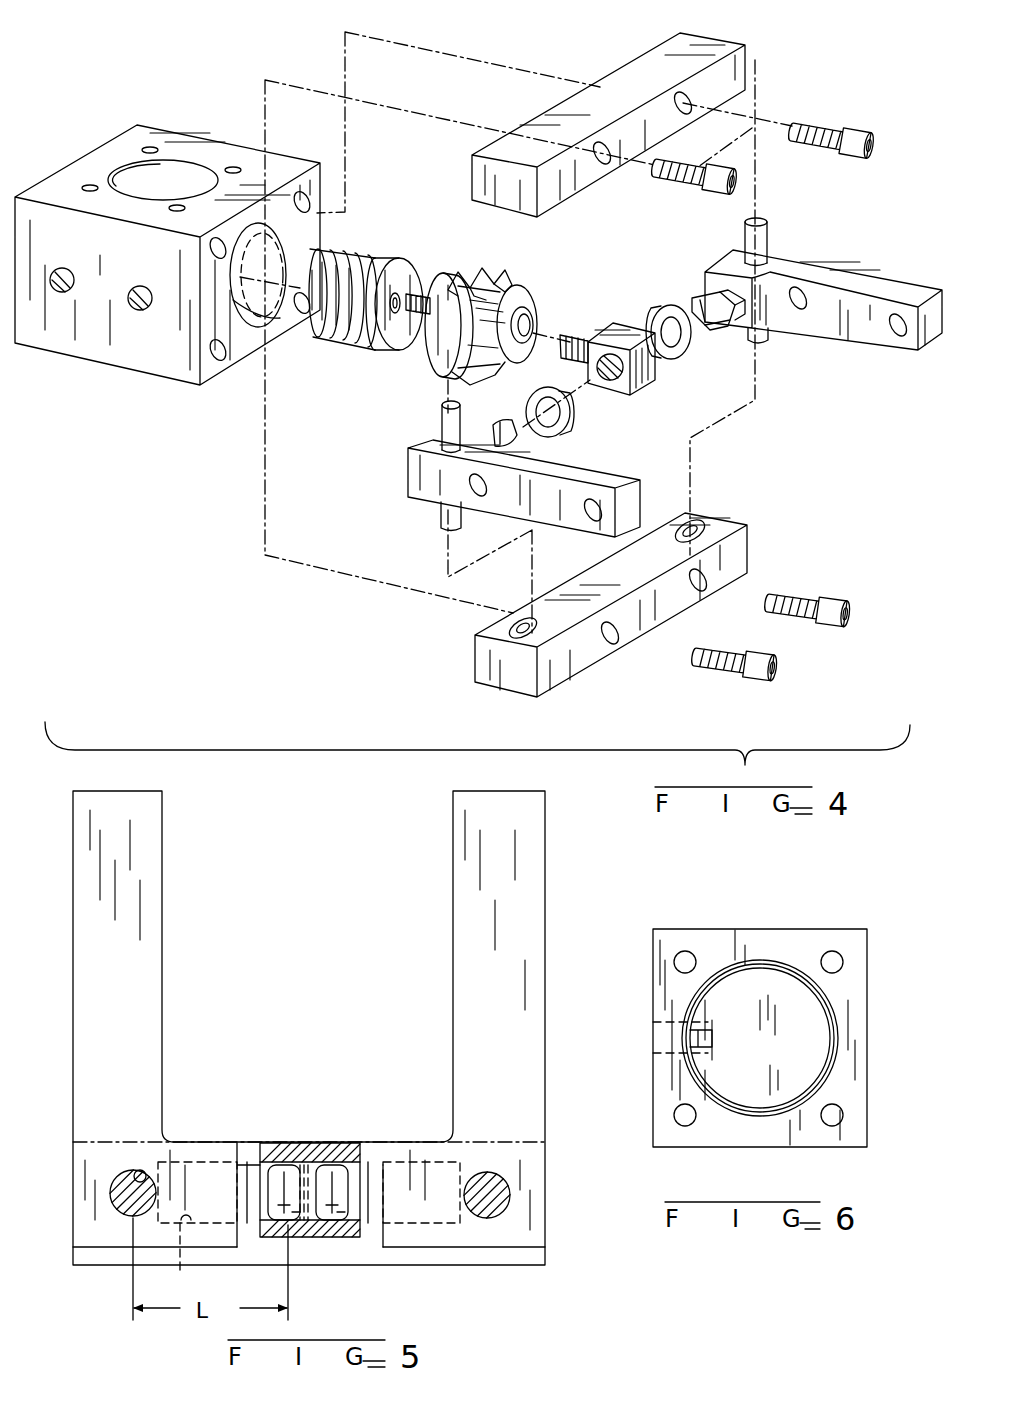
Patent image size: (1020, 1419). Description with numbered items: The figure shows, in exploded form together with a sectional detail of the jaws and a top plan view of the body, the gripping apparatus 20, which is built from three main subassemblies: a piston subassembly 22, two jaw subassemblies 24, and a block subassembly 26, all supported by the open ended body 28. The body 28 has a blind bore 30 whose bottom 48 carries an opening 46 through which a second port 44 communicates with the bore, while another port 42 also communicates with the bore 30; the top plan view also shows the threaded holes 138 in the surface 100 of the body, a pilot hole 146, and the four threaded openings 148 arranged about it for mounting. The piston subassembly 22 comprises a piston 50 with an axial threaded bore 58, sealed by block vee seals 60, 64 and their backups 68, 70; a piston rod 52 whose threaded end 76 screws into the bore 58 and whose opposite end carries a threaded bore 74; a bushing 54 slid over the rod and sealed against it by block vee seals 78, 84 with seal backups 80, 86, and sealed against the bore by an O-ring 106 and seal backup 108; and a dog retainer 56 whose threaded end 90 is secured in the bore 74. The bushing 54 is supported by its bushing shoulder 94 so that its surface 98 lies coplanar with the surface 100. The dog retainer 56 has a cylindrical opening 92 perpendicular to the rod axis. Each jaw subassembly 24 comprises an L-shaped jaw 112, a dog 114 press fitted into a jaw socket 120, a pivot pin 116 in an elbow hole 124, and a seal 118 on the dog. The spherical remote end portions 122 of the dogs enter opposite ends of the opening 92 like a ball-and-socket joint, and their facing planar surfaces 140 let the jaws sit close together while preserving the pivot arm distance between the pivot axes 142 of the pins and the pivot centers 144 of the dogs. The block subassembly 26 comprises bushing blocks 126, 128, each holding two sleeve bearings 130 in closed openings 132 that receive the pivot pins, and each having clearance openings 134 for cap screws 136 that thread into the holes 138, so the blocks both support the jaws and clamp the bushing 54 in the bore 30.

In FIG. 4, the gripping apparatus 20 is at (185, 55).
In FIG. 4, the piston subassembly 22 is at (338, 398).
In FIG. 4, the jaw subassembly 24 is at (812, 230).
In FIG. 4, the block subassembly 26 is at (770, 62).
In FIG. 4, the open ended body 28 is at (58, 180).
In FIG. 6, the open ended body 28 is at (747, 930).
In FIG. 4, the blind bore 30 is at (233, 313).
In FIG. 4, the port 42 is at (140, 311).
In FIG. 4, the second port 44 is at (62, 292).
In FIG. 6, the second port 44 is at (672, 1052).
In FIG. 6, the opening 46 is at (713, 1042).
In FIG. 6, the bottom 48 is at (775, 1055).
In FIG. 4, the piston 50 is at (367, 249).
In FIG. 4, the piston rod 52 is at (522, 308).
In FIG. 4, the bushing 54 is at (485, 376).
In FIG. 4, the dog retainer 56 is at (648, 383).
In FIG. 5, the dog retainer 56 is at (273, 1142).
In FIG. 4, the threaded bore 58 is at (410, 268).
In FIG. 4, the block vee seal 60 is at (387, 255).
In FIG. 4, the block vee seal 64 is at (338, 254).
In FIG. 4, the backup 68 is at (375, 257).
In FIG. 4, the backup 70 is at (350, 250).
In FIG. 4, the threaded bore 74 is at (526, 343).
In FIG. 4, the threaded end 76 is at (418, 318).
In FIG. 4, the block vee seal 78 is at (445, 373).
In FIG. 4, the seal backup 80 is at (457, 397).
In FIG. 4, the block vee seal 84 is at (430, 335).
In FIG. 4, the seal backup 86 is at (440, 360).
In FIG. 4, the threaded end 90 is at (580, 331).
In FIG. 4, the cylindrical opening 92 is at (610, 380).
In FIG. 5, the cylindrical opening 92 is at (297, 1220).
In FIG. 4, the bushing shoulder 94 is at (460, 272).
In FIG. 4, the surface 98 is at (519, 290).
In FIG. 4, the surface 100 is at (213, 367).
In FIG. 4, the O-ring 106 is at (490, 270).
In FIG. 4, the seal backup 108 is at (502, 278).
In FIG. 4, the L-shaped jaw 112 is at (853, 278).
In FIG. 5, the L-shaped jaw 112 is at (145, 968).
In FIG. 4, the dog 114 is at (728, 320).
In FIG. 5, the dog 114 is at (247, 1225).
In FIG. 4, the pivot pin 116 is at (442, 512).
In FIG. 5, the pivot pin 116 is at (110, 1200).
In FIG. 4, the seal 118 is at (567, 413).
In FIG. 5, the seal 118 is at (247, 1148).
In FIG. 4, the jaw socket 120 is at (718, 293).
In FIG. 5, the jaw socket 120 is at (180, 1226).
In FIG. 4, the remote end portion 122 is at (517, 437).
In FIG. 5, the remote end portion 122 is at (292, 1222).
In FIG. 4, the elbow hole 124 is at (440, 427).
In FIG. 5, the elbow hole 124 is at (143, 1173).
In FIG. 4, the bushing block 126 is at (690, 45).
In FIG. 4, the bushing block 128 is at (492, 668).
In FIG. 4, the sleeve bearing 130 is at (692, 525).
In FIG. 4, the opening 132 is at (700, 532).
In FIG. 4, the clearance opening 134 is at (607, 147).
In FIG. 4, the cap screw 136 is at (832, 127).
In FIG. 4, the threaded hole 138 is at (306, 200).
In FIG. 6, the threaded hole 138 is at (685, 951).
In FIG. 5, the planar surface 140 is at (312, 1177).
In FIG. 5, the pivot axis 142 is at (133, 1185).
In FIG. 5, the pivot center 144 is at (288, 1195).
In FIG. 4, the pilot hole 146 is at (170, 175).
In FIG. 4, the threaded opening 148 is at (147, 149).